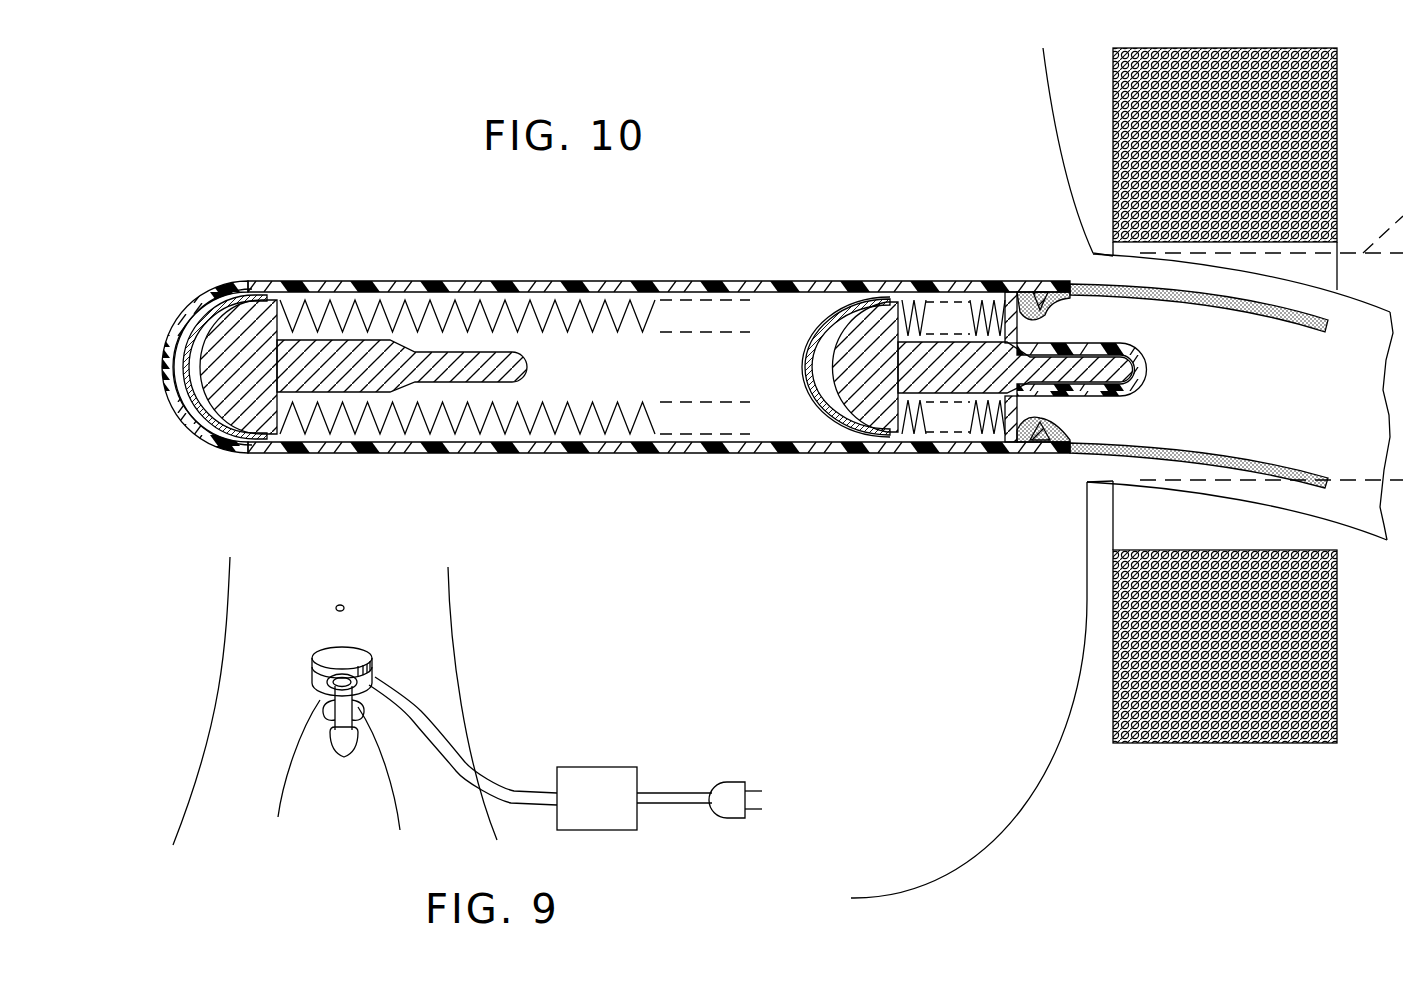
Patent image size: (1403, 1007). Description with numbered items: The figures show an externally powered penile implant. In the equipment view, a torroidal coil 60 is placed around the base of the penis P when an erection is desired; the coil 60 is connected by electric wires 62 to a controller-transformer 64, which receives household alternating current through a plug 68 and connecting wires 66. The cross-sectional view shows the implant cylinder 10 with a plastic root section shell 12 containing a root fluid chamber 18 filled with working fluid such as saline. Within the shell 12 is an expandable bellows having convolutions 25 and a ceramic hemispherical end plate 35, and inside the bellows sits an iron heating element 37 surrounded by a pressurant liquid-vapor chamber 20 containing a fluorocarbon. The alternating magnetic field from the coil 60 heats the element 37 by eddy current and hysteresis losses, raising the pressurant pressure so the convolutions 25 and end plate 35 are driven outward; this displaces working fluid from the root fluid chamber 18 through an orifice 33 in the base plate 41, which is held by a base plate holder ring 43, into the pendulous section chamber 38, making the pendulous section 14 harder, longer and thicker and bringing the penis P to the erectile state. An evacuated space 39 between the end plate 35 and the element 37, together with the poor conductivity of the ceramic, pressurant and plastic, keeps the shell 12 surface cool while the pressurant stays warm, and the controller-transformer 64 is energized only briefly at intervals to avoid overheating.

In FIG. 10, the cylinder 10 is at (1046, 250).
In FIG. 10, the root section shell 12 is at (594, 282).
In FIG. 10, the pendulous section 14 is at (1190, 455).
In FIG. 10, the root fluid chamber 18 is at (438, 432).
In FIG. 10, the pressurant liquid-vapor chamber 20 is at (405, 338).
In FIG. 10, the bellows convolutions 25 is at (456, 300).
In FIG. 10, the orifice 33 is at (1010, 430).
In FIG. 10, the hemispherical end plate 35 is at (194, 312).
In FIG. 10, the heating element 37 is at (350, 392).
In FIG. 10, the pendulous section chamber 38 is at (1260, 392).
In FIG. 10, the evacuated space 39 is at (222, 408).
In FIG. 10, the base plate 41 is at (1113, 346).
In FIG. 10, the base plate holder ring 43 is at (1048, 428).
In FIG. 10, the torroidal coil 60 is at (1148, 48).
In FIG. 9, the torroidal coil 60 is at (332, 650).
In FIG. 9, the electric wires 62 is at (462, 767).
In FIG. 9, the controller-transformer 64 is at (618, 823).
In FIG. 9, the connecting wires 66 is at (674, 805).
In FIG. 9, the plug 68 is at (738, 815).
In FIG. 10, the penis P is at (1293, 503).
In FIG. 9, the penis P is at (335, 753).